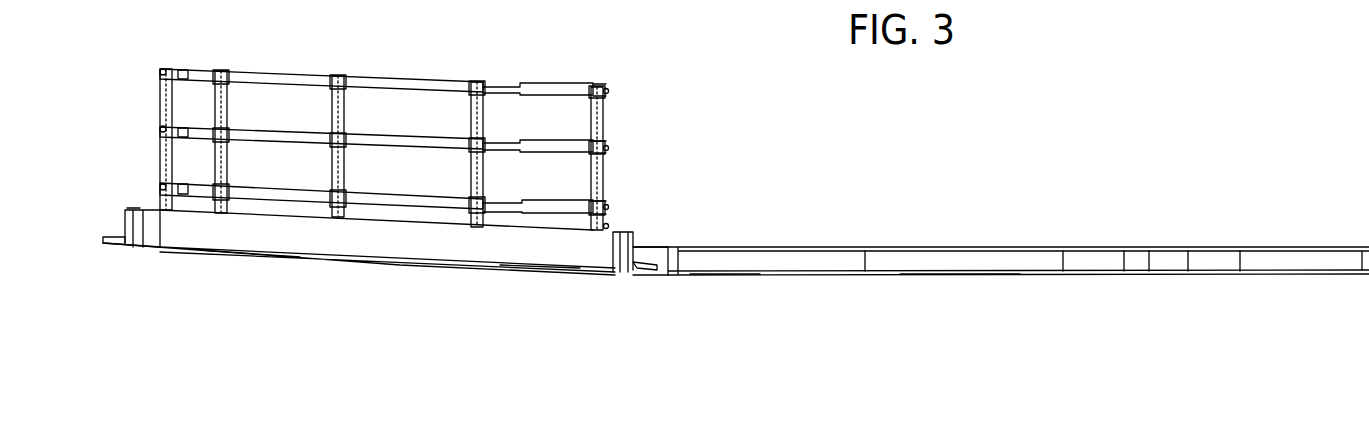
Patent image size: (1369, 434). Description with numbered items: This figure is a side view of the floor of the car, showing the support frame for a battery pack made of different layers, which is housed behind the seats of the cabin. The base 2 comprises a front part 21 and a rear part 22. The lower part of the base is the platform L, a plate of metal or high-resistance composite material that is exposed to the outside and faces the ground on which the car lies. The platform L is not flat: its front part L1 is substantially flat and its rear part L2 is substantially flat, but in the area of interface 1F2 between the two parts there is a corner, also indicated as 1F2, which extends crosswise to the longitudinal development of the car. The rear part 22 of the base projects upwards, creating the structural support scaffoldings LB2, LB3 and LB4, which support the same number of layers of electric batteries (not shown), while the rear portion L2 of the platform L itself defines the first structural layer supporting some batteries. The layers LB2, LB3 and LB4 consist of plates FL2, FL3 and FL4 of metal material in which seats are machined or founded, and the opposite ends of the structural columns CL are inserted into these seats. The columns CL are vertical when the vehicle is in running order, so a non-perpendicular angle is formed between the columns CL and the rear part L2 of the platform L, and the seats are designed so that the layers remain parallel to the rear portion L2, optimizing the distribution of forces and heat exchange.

The base 2 is at (1078, 192).
The front part 21 is at (1196, 288).
The rear part 22 is at (395, 266).
The interface corner 1F2 is at (633, 290).
The structural columns CL is at (233, 100).
The plate FL2 is at (503, 201).
The plate FL3 is at (503, 141).
The plate FL4 is at (503, 82).
The structural support scaffolding LB2 is at (621, 210).
The structural support scaffolding LB3 is at (621, 152).
The structural support scaffolding LB4 is at (613, 91).
The platform L is at (545, 272).
The front part of the platform L1 is at (958, 277).
The rear part of the platform L2 is at (250, 262).